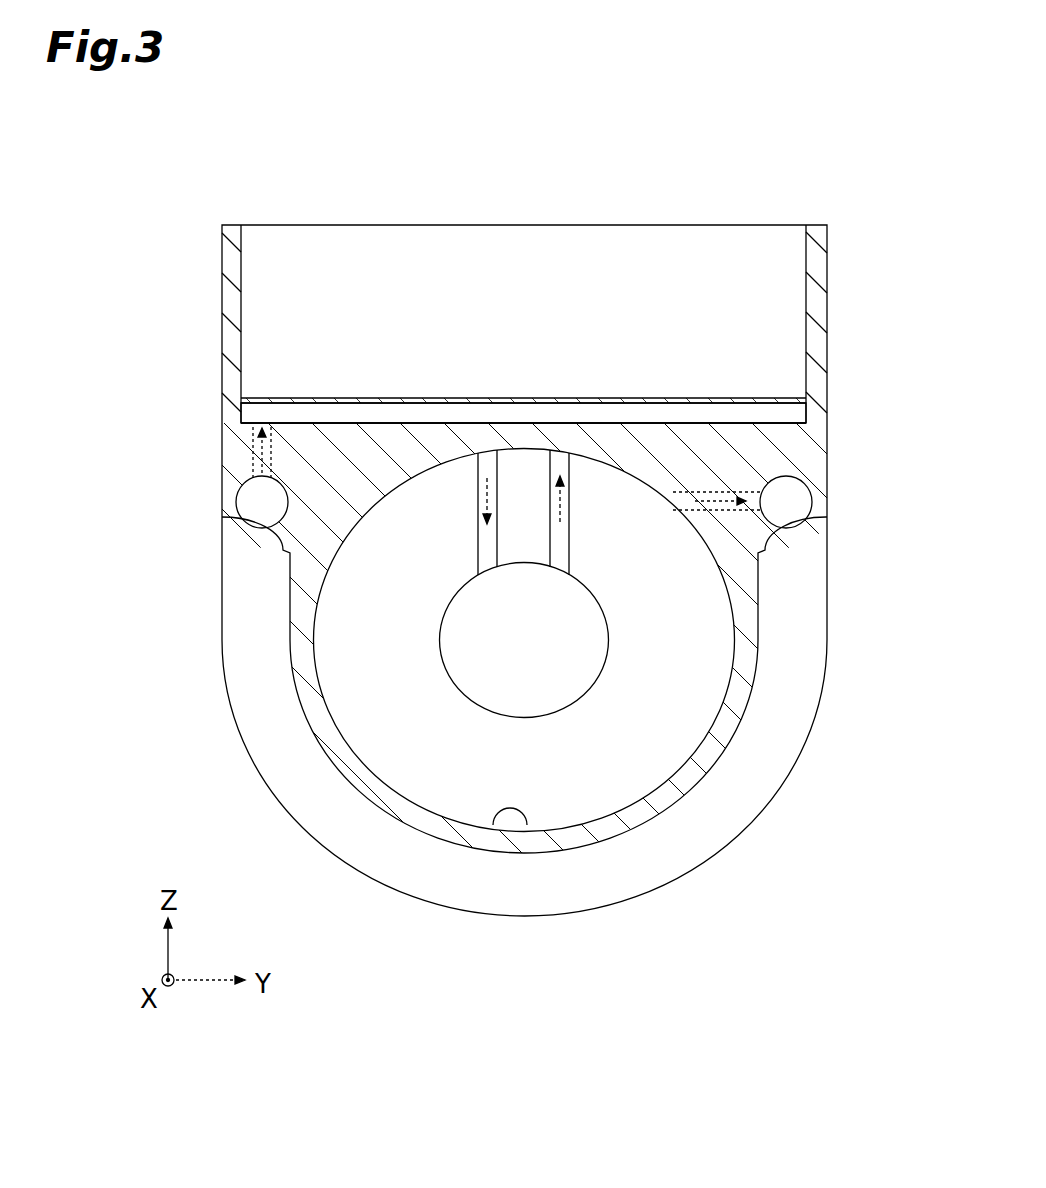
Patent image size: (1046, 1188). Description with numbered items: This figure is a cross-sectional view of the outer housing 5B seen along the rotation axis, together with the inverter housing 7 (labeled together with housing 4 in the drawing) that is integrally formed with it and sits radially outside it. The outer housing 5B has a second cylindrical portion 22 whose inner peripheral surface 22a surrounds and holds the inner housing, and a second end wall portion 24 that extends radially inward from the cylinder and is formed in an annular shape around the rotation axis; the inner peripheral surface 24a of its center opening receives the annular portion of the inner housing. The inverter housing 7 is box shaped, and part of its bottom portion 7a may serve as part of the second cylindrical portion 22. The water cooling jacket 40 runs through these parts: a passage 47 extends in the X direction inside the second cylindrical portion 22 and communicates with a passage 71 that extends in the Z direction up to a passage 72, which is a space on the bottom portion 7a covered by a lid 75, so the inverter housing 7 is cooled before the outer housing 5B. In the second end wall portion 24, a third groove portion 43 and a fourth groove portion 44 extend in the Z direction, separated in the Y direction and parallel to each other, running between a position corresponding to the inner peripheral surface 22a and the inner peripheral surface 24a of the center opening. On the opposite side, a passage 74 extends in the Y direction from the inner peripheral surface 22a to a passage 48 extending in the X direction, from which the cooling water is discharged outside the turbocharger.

The inverter housing 7 is at (823, 292).
The housing body 4 is at (586, 570).
The bottom portion 7a is at (525, 422).
The passage 72 is at (502, 412).
The lid 75 is at (350, 398).
The second cylindrical portion 22 is at (688, 776).
The outer housing 5B is at (523, 683).
The inner peripheral surface 22a is at (527, 825).
The second end wall portion 24 is at (677, 648).
The inner peripheral surface 24a is at (460, 683).
The water cooling jacket 40 is at (523, 464).
The third groove portion 43 is at (477, 497).
The fourth groove portion 44 is at (571, 497).
The passage 47 is at (258, 500).
The passage 48 is at (790, 500).
The passage 71 is at (252, 453).
The passage 74 is at (722, 488).